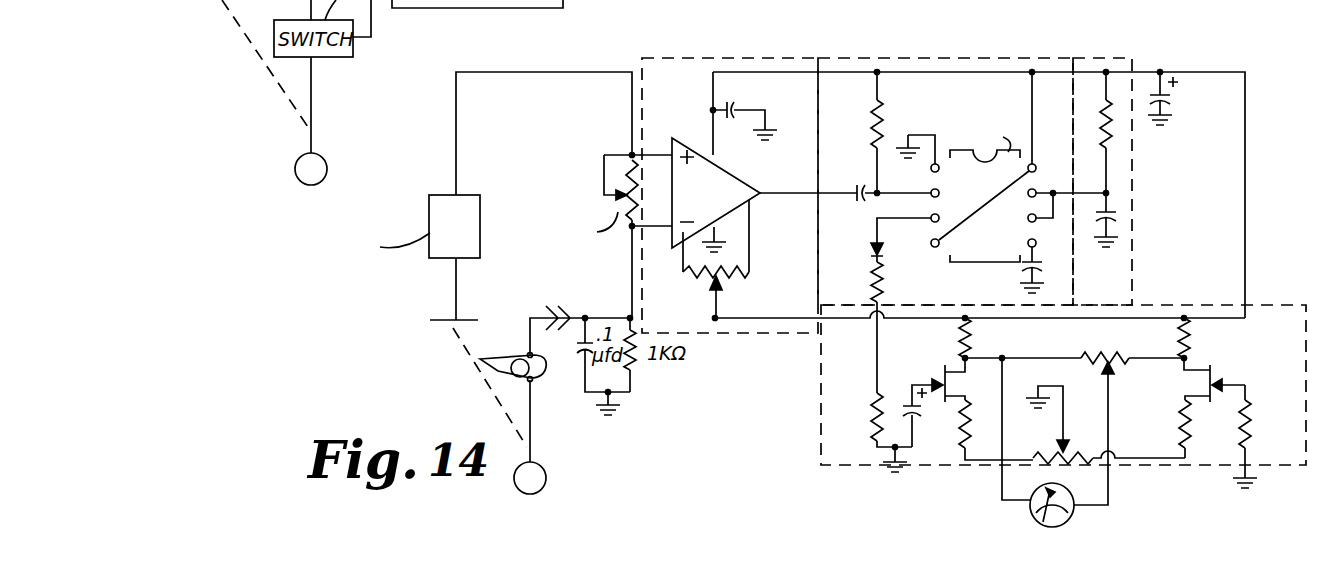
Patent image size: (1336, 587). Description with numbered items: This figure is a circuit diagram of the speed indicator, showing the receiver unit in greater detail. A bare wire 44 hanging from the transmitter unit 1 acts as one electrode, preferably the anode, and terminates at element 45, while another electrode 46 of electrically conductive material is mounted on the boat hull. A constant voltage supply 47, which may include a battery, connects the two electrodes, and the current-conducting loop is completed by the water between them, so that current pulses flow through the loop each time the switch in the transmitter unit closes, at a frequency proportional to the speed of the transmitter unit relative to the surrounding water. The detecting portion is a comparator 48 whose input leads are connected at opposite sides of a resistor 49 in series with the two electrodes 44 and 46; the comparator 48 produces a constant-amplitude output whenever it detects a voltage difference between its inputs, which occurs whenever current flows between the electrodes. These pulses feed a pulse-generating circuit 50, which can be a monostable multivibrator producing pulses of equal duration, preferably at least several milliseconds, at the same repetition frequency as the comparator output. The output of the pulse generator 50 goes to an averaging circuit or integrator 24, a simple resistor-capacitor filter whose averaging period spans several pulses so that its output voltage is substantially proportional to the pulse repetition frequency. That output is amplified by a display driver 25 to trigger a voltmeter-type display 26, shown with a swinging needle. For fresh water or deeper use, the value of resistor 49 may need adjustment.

The transducer 1 is at (502, 355).
The integrator 24 is at (1095, 58).
The display driver 25 is at (1268, 305).
The display 26 is at (1078, 515).
The bare wire 44 is at (310, 132).
The terminal probe 45 is at (296, 172).
The electrode 46 is at (438, 332).
The constant voltage supply 47 is at (480, 226).
The comparator 48 is at (780, 58).
The resistor 49 is at (640, 163).
The pulse-generating circuit 50 is at (918, 58).